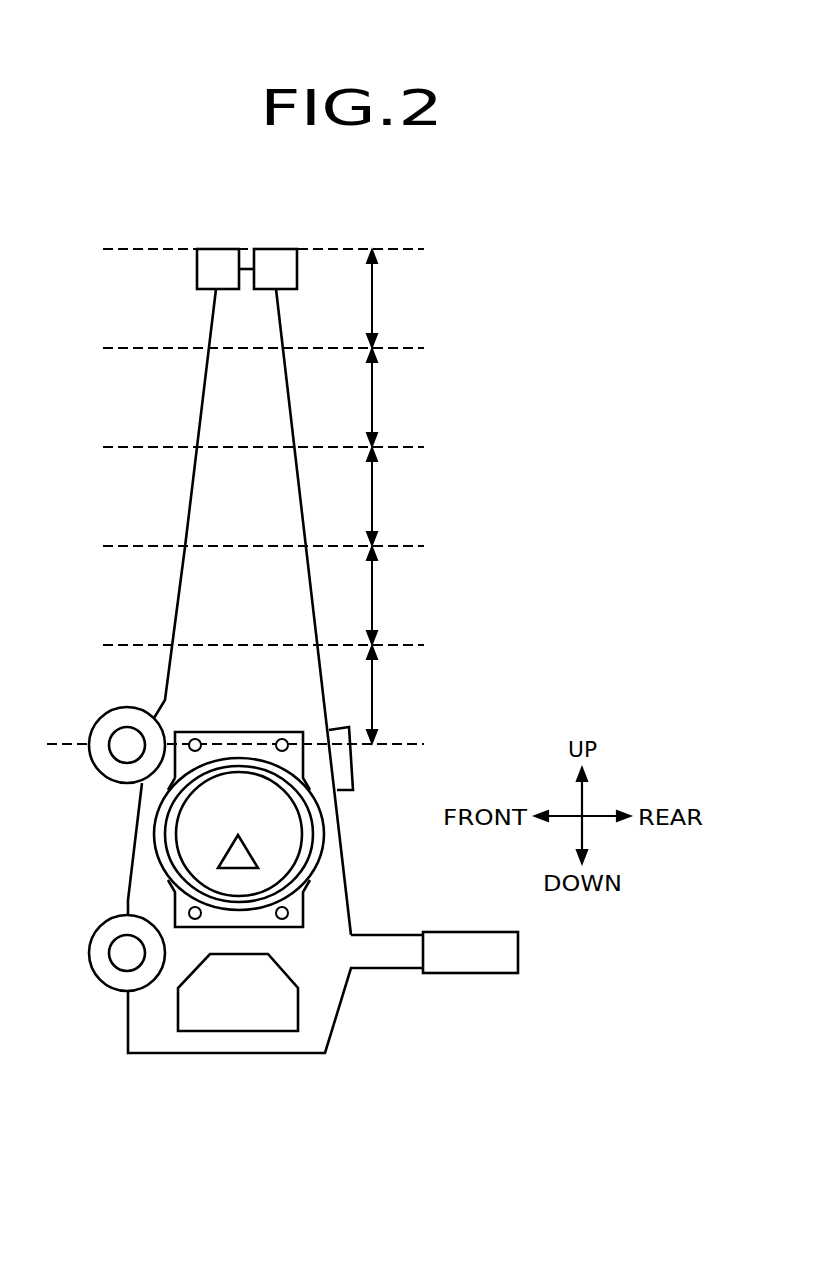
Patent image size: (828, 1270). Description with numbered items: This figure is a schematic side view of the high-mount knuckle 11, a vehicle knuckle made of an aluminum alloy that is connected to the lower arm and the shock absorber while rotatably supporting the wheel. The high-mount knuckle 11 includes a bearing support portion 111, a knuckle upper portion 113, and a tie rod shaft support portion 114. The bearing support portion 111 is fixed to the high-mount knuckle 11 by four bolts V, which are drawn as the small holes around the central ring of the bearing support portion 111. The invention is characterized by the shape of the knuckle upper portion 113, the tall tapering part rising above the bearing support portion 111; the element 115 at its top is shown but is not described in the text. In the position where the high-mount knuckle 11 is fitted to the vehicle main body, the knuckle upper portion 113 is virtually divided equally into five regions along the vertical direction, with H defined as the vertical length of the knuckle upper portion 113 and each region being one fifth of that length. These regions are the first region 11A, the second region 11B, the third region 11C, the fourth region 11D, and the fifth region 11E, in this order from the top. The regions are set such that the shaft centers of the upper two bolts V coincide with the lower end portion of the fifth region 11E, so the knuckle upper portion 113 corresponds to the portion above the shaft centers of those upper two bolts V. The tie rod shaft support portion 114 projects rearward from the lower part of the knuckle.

The high-mount knuckle 11 is at (153, 1034).
The bearing support portion 111 is at (183, 856).
The knuckle upper portion 113 is at (193, 594).
The tie rod shaft support portion 114 is at (475, 974).
The upper units 115 is at (225, 257).
The first region 11A is at (302, 298).
The second region 11B is at (301, 397).
The third region 11C is at (301, 496).
The fourth region 11D is at (301, 595).
The fifth region 11E is at (273, 694).
The bolts V is at (198, 750).